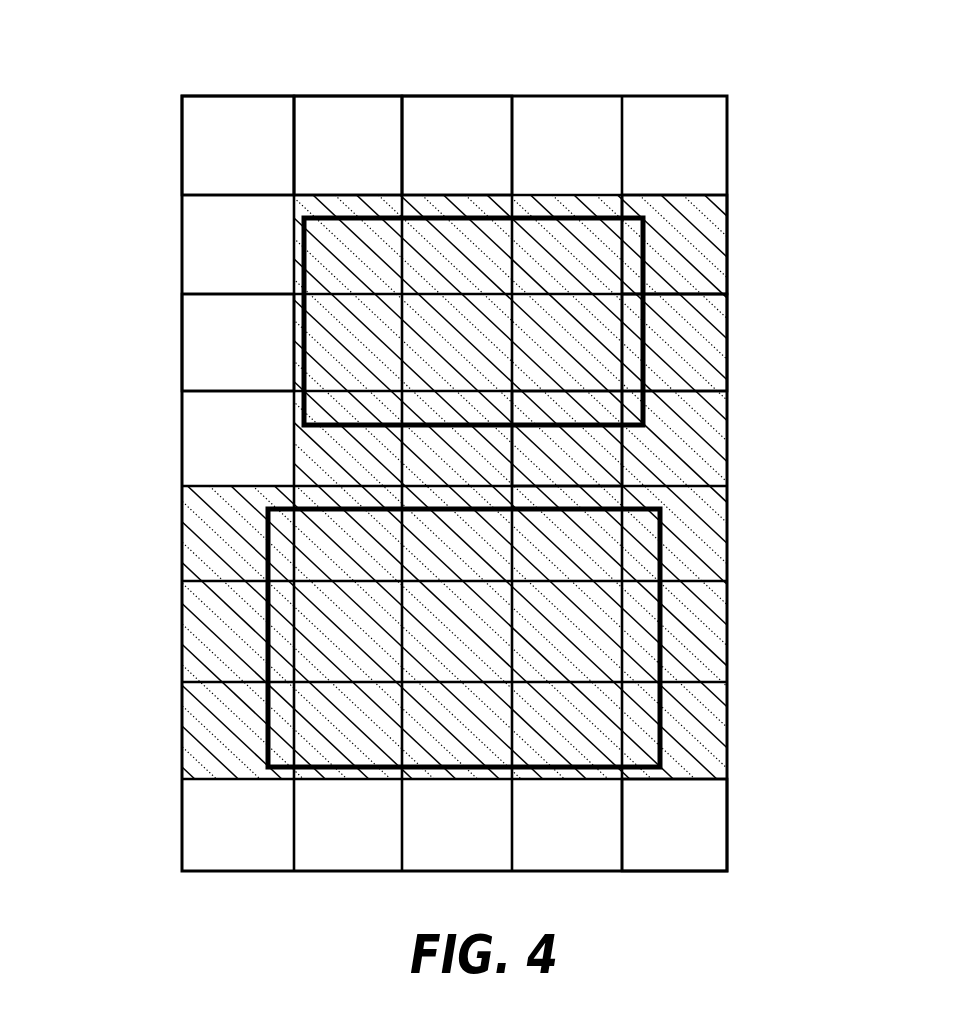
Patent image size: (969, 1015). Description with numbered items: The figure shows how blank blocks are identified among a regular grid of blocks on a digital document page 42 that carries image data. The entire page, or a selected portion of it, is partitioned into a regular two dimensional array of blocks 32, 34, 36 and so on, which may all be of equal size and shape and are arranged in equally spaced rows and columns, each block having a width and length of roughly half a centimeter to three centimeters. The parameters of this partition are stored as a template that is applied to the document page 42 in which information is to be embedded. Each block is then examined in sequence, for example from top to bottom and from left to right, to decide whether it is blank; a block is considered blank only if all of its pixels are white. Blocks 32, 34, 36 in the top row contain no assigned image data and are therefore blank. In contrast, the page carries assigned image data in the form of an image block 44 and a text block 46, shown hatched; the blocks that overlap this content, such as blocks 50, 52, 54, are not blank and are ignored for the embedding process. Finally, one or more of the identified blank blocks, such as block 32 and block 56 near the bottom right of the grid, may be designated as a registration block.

The block 32 is at (247, 130).
The block 34 is at (353, 130).
The block 36 is at (462, 130).
The digital document page 42 is at (180, 310).
The image data 44 is at (302, 363).
The image data 46 is at (284, 541).
The block 50 is at (668, 252).
The block 52 is at (701, 353).
The block 54 is at (582, 495).
The registration block 56 is at (673, 823).